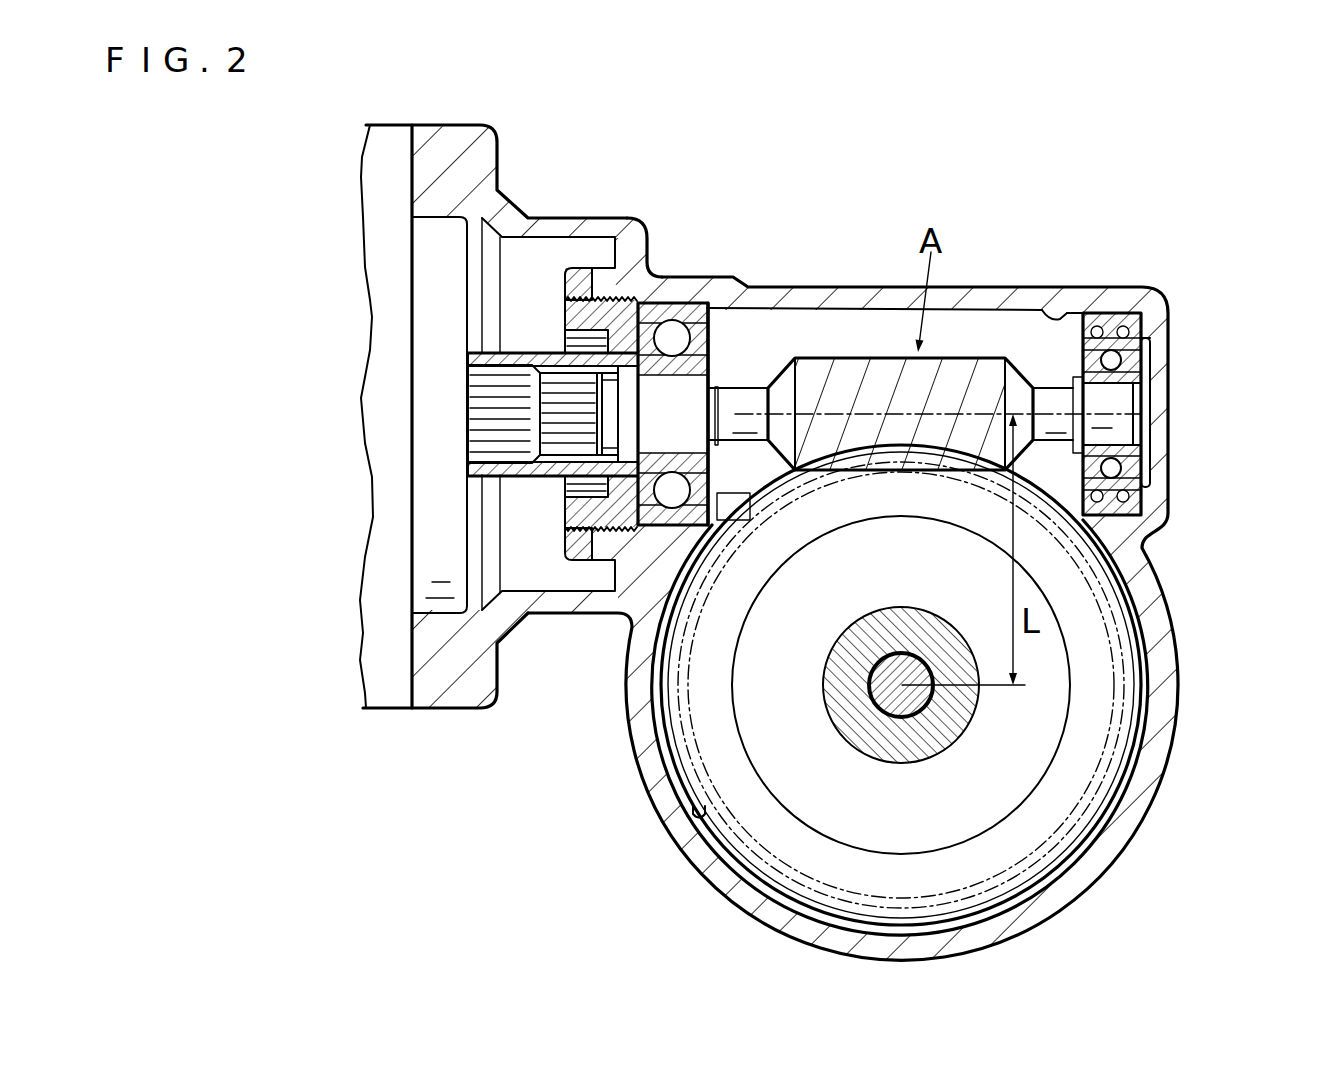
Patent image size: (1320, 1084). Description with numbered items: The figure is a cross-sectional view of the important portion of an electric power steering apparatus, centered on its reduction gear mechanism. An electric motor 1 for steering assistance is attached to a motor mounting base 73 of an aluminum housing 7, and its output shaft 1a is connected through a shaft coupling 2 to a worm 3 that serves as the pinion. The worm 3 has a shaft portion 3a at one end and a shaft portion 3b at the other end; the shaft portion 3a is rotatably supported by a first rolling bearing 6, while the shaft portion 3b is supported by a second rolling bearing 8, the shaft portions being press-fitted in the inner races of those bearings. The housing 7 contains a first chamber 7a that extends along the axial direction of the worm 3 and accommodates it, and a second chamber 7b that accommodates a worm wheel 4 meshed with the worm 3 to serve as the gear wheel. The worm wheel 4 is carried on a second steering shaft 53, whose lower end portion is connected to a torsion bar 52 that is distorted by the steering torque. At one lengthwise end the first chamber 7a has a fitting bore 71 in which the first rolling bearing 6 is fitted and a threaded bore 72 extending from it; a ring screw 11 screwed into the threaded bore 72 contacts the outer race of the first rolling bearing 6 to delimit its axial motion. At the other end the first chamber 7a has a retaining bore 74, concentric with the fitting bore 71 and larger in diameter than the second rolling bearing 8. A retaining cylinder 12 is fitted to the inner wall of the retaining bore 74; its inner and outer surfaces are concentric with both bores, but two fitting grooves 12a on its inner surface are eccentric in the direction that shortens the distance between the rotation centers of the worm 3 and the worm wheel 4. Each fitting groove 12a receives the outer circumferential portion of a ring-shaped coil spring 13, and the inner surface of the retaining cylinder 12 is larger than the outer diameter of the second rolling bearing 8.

The electric motor 1 is at (381, 125).
The output shaft 1a is at (506, 368).
The shaft coupling 2 is at (515, 487).
The worm 3 is at (850, 368).
The shaft portion 3a is at (560, 450).
The shaft portion 3b is at (1118, 416).
The worm wheel 4 is at (1138, 678).
The first rolling bearing 6 is at (658, 310).
The housing 7 is at (897, 549).
The first chamber 7a is at (962, 320).
The second chamber 7b is at (702, 818).
The second rolling bearing 8 is at (1145, 340).
The ring screw 11 is at (575, 287).
The retaining cylinder 12 is at (1122, 320).
The fitting groove 12a is at (1109, 313).
The coil spring 13 is at (1097, 328).
The torsion bar 52 is at (905, 704).
The second steering shaft 53 is at (967, 719).
The fitting bore 71 is at (711, 306).
The threaded bore 72 is at (636, 296).
The motor mounting base 73 is at (427, 172).
The retaining bore 74 is at (1053, 318).